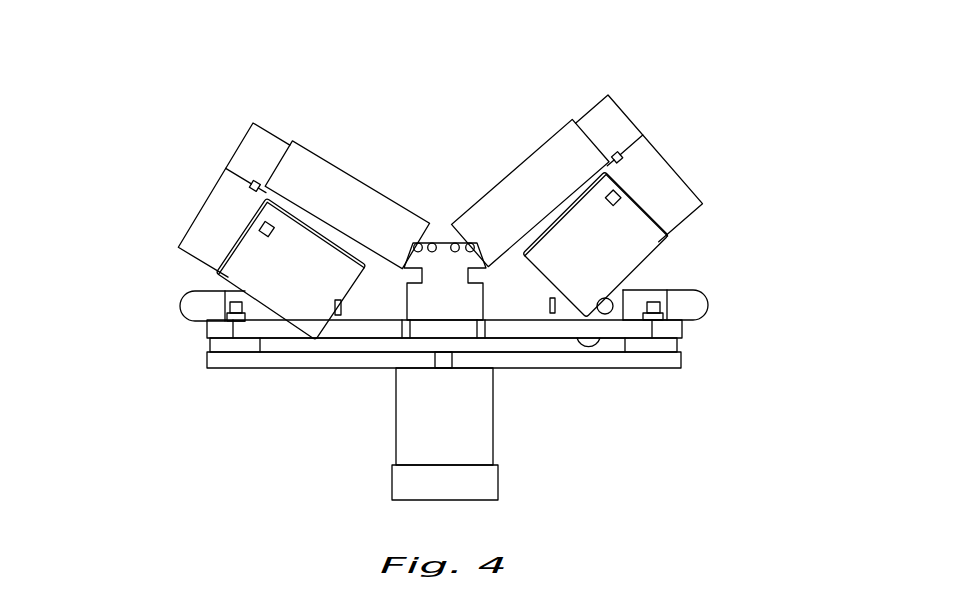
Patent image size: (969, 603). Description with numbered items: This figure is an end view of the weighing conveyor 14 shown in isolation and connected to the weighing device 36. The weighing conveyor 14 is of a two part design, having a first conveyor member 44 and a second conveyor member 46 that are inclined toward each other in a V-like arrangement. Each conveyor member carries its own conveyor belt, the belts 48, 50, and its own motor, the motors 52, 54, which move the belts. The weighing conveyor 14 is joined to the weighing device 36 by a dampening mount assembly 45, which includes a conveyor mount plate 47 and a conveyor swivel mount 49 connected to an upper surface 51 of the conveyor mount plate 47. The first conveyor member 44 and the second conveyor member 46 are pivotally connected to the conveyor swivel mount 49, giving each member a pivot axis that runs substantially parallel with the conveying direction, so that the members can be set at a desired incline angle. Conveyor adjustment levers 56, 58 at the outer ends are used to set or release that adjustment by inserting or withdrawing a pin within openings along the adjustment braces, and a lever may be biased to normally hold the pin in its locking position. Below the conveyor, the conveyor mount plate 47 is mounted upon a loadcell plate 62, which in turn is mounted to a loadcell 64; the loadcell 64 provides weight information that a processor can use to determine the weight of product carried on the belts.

The weighing conveyor 14 is at (746, 99).
The weighing device 36 is at (559, 427).
The first conveyor member 44 is at (315, 172).
The dampening mount assembly 45 is at (130, 381).
The second conveyor member 46 is at (560, 157).
The conveyor mount plate 47 is at (678, 328).
The conveyor belt 48 is at (350, 162).
The conveyor swivel mount 49 is at (445, 242).
The conveyor belt 50 is at (515, 168).
The upper surface 51 is at (385, 320).
The motor 52 is at (256, 258).
The motor 54 is at (626, 256).
The conveyor adjustment lever 56 is at (182, 303).
The conveyor adjustment lever 58 is at (708, 307).
The loadcell plate 62 is at (615, 360).
The loadcell 64 is at (415, 412).